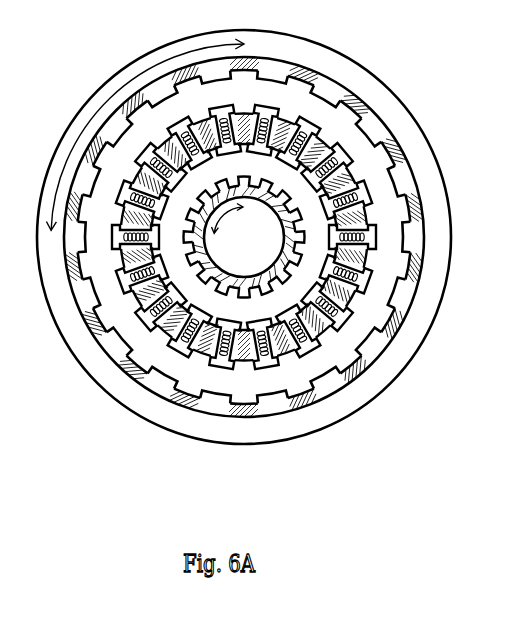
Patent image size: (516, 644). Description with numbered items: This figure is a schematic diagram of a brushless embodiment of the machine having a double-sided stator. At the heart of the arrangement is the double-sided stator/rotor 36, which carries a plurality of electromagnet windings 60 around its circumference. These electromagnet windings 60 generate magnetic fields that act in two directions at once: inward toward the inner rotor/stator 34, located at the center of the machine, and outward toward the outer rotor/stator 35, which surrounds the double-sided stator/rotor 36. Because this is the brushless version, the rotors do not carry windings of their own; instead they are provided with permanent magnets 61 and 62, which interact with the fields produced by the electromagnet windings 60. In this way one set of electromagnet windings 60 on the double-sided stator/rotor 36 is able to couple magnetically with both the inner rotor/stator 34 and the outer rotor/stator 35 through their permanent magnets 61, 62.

The inner rotor/stator 34 is at (263, 200).
The outer rotor/stator 35 is at (367, 348).
The double-sided stator/rotor 36 is at (317, 325).
The electromagnet windings 60 is at (260, 353).
The permanent magnets 61 is at (327, 90).
The permanent magnets 62 is at (204, 268).